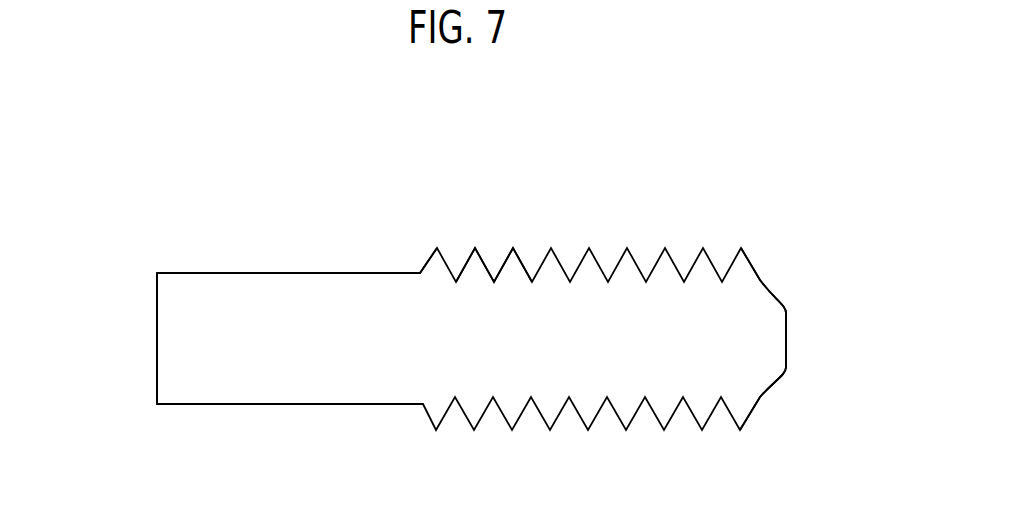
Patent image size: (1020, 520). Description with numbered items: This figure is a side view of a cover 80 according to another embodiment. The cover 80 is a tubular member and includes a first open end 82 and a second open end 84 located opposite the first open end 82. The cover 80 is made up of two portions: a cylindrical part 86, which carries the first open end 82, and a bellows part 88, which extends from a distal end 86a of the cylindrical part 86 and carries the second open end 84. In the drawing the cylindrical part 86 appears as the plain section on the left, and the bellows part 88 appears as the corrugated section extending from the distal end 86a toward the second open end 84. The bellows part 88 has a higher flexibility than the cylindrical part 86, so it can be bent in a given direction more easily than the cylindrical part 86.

The cover 80 is at (722, 122).
The first open end 82 is at (157, 325).
The second open end 84 is at (788, 337).
The cylindrical part 86 is at (278, 300).
The distal end 86a is at (420, 273).
The bellows part 88 is at (503, 266).